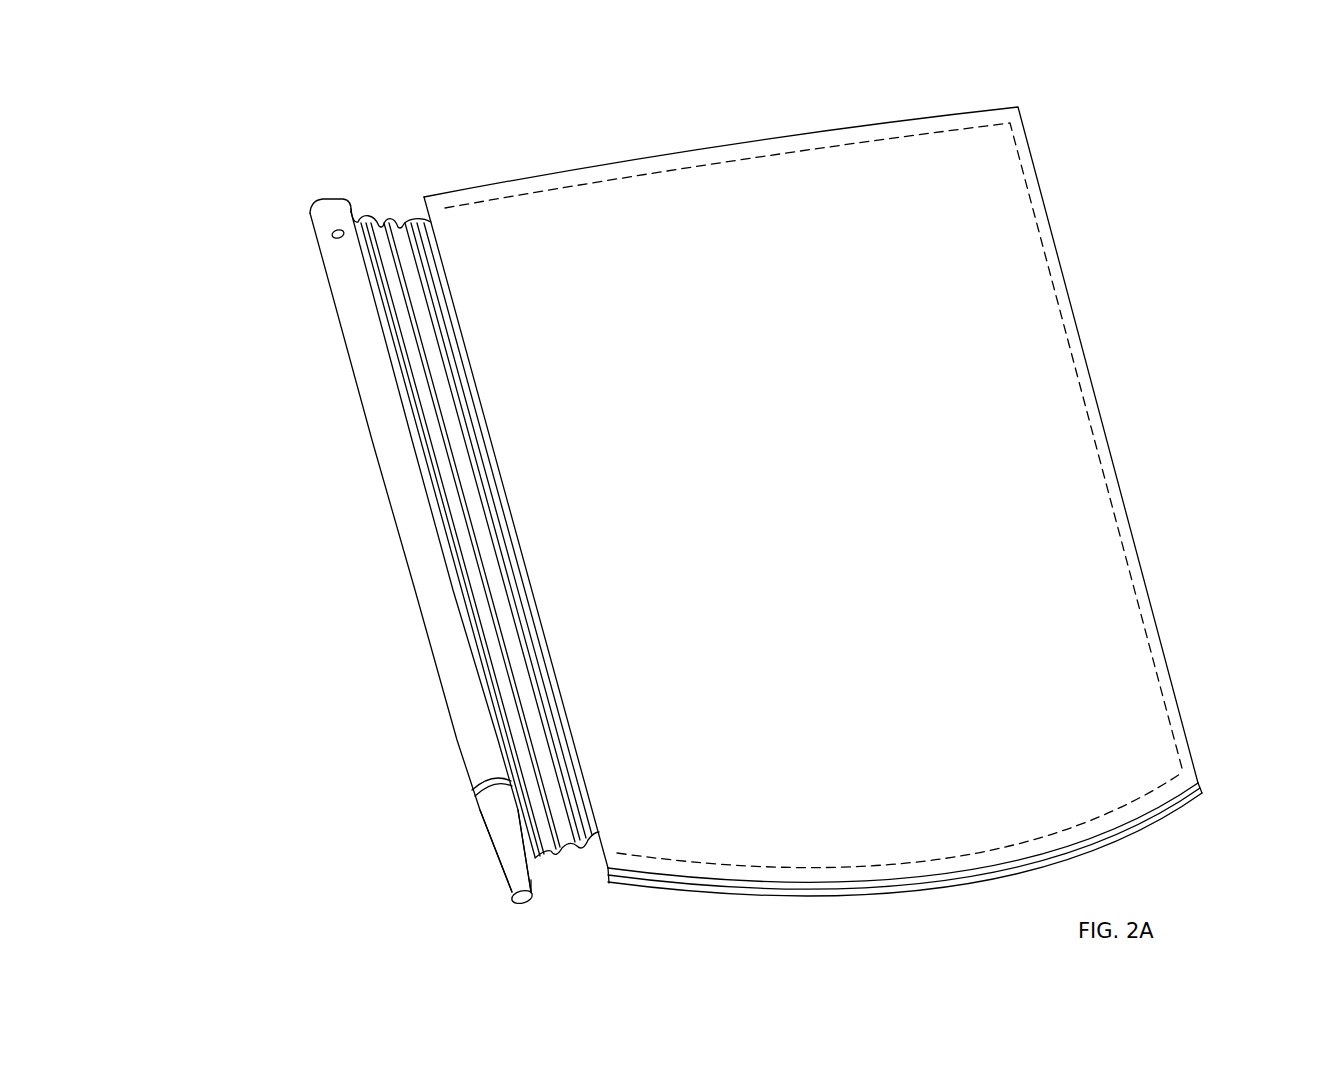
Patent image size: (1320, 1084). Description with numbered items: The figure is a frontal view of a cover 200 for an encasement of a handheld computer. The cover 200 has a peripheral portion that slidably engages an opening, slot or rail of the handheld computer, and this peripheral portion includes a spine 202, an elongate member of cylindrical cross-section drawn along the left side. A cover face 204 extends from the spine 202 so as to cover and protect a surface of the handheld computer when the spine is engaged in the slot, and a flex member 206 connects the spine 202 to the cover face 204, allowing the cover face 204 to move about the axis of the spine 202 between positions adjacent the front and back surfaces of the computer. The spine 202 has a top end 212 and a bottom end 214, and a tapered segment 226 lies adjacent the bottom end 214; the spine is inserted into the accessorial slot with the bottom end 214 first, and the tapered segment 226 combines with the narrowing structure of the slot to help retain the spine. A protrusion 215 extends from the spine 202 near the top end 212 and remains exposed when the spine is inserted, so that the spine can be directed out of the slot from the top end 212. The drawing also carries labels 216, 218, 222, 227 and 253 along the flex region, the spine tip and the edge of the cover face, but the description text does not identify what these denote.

The cover 200 is at (1103, 270).
The spine 202 is at (462, 694).
The cover face 204 is at (750, 293).
The flex member 206 is at (377, 242).
The top end 212 is at (327, 202).
The bottom end 214 is at (538, 888).
The protrusion 215 is at (332, 234).
The second sheet 216 is at (423, 452).
The third sheet 218 is at (508, 526).
The sheet edges 222 is at (523, 768).
The tapered segment 226 is at (493, 820).
The hinge tip 227 is at (524, 902).
The stacked page edges 253 is at (1165, 753).